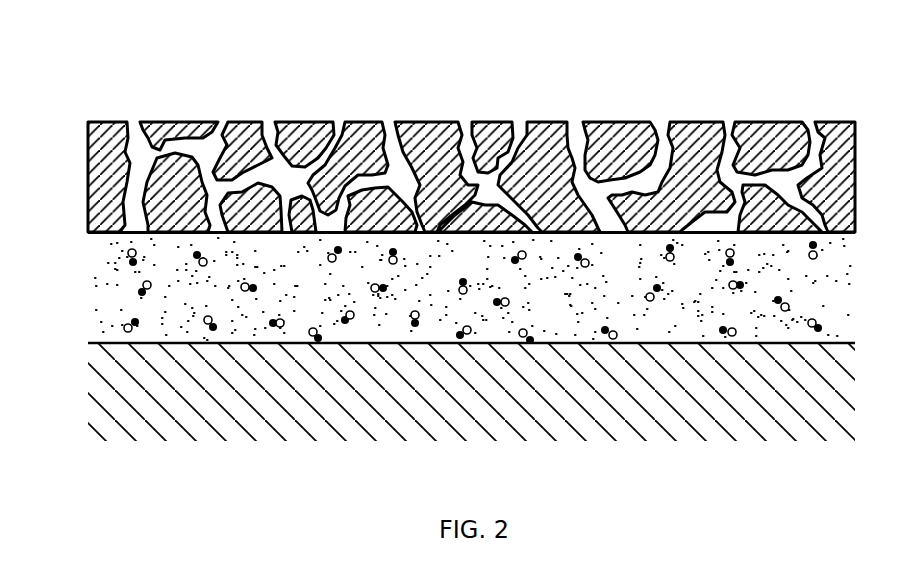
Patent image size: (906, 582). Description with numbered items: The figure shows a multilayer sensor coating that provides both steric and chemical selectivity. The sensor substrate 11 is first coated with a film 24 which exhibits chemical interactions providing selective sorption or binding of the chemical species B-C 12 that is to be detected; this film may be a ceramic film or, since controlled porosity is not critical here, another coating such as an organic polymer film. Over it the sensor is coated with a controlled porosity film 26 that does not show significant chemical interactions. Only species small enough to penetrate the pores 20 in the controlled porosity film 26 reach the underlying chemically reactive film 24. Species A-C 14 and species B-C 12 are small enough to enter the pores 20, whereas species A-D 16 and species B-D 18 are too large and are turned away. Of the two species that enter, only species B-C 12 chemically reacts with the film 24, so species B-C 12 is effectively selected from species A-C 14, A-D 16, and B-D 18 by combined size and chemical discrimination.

The sensor substrate 11 is at (471, 392).
The species B-C 12 is at (224, 106).
The species A-C 14 is at (463, 106).
The species A-D 16 is at (609, 89).
The species B-D 18 is at (372, 89).
The pores 20 is at (732, 122).
The film 24 is at (471, 290).
The controlled porosity film 26 is at (471, 177).